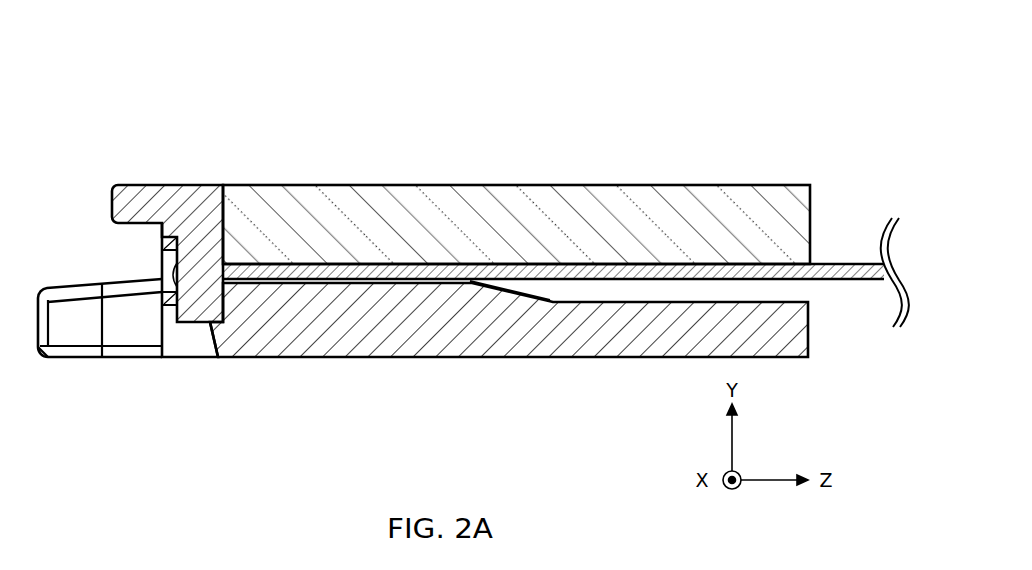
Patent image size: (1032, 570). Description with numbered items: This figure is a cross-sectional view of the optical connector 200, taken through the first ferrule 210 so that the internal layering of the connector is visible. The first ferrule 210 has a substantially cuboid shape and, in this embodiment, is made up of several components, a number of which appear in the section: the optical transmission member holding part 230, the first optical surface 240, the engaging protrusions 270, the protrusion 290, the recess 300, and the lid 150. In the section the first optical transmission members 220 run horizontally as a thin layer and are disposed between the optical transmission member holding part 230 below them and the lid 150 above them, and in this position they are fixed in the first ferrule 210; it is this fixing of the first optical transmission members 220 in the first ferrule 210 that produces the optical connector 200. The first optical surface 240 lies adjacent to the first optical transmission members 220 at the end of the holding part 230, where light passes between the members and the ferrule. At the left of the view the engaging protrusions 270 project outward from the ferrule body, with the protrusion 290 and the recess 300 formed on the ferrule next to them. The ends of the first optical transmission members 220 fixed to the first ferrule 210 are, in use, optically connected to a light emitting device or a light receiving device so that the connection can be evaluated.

The optical connector 200 is at (777, 79).
The first ferrule 210 is at (668, 150).
The lid 150 is at (522, 220).
The first optical transmission members 220 is at (833, 265).
The optical transmission member holding part 230 is at (330, 287).
The first optical surface 240 is at (238, 278).
The engaging protrusions 270 is at (110, 320).
The protrusion 290 is at (135, 205).
The recess 300 is at (202, 338).